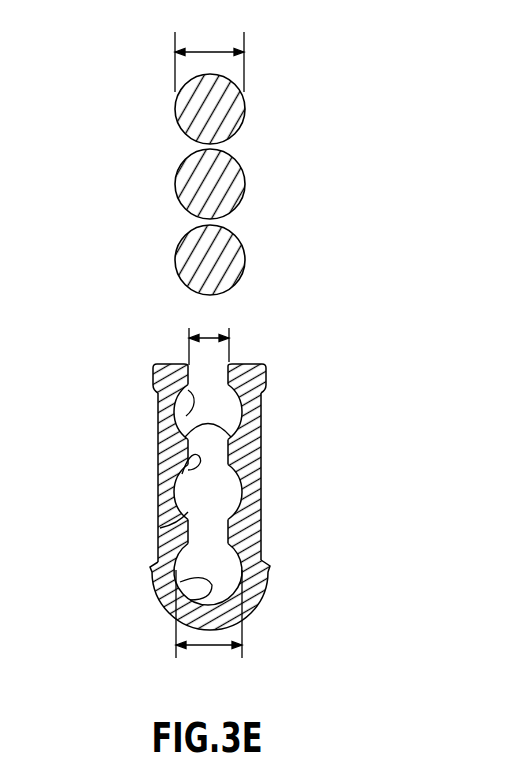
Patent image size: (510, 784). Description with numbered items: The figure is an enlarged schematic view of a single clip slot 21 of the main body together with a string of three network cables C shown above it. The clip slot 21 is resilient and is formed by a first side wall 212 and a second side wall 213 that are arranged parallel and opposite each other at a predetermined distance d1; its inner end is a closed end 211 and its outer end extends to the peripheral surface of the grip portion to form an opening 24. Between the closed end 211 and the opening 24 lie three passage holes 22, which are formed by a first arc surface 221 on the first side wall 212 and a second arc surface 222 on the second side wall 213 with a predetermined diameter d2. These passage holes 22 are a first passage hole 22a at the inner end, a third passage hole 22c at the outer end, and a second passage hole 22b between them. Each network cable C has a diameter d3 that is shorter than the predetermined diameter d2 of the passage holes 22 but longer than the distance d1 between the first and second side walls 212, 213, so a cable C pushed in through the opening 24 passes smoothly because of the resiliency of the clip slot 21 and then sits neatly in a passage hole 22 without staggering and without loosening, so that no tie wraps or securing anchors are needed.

The clip slot 21 is at (58, 456).
The closed end 211 is at (180, 582).
The first side wall 212 is at (160, 528).
The second side wall 213 is at (182, 474).
The first arc surface 221 is at (157, 438).
The second arc surface 222 is at (157, 392).
The passage hole 22 is at (287, 495).
The first passage hole 22a is at (260, 572).
The second passage hole 22b is at (234, 487).
The third passage hole 22c is at (234, 405).
The opening 24 is at (210, 380).
The network cable C is at (153, 82).
The predetermined distance d1 is at (209, 337).
The predetermined diameter d2 is at (209, 623).
The diameter of the network cable d3 is at (209, 56).